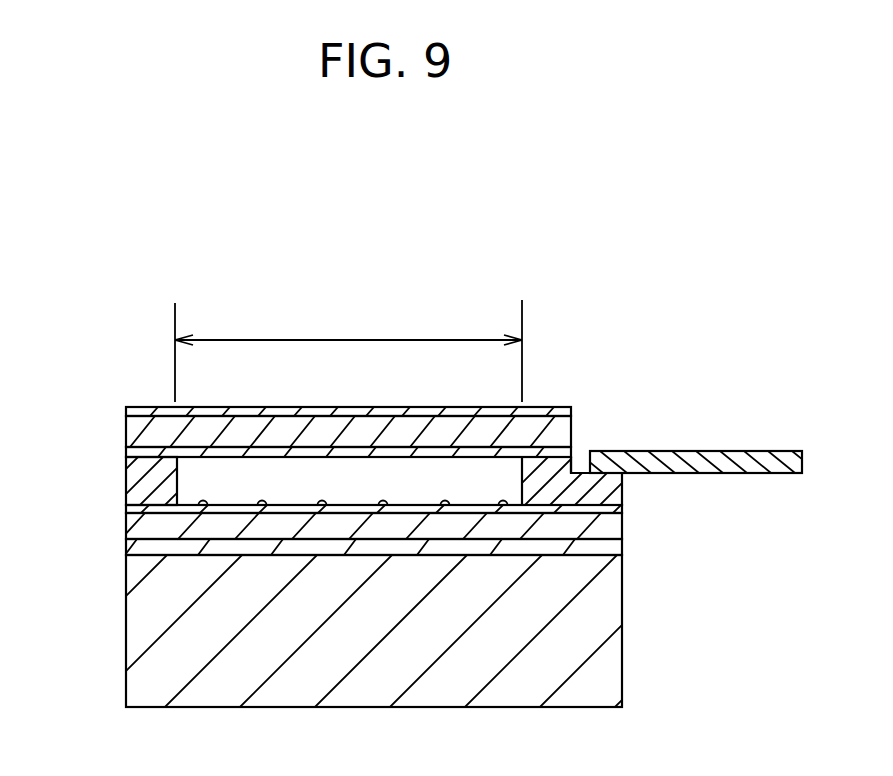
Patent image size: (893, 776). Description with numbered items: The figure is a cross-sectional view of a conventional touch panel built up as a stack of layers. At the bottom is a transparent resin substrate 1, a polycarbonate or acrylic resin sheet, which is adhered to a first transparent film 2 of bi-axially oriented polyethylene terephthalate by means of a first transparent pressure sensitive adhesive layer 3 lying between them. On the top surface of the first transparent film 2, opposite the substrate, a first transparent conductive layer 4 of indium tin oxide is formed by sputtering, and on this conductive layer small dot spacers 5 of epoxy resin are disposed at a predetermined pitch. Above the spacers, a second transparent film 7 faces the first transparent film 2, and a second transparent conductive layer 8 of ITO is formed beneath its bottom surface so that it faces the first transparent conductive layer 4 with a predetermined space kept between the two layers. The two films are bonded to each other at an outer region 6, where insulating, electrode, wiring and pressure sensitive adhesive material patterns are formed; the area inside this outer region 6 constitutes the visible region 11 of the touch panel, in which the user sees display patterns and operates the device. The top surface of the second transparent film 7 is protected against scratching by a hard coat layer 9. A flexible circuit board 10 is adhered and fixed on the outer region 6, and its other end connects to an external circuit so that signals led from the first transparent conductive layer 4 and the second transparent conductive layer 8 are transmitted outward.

The transparent resin substrate 1 is at (142, 675).
The first transparent film 2 is at (143, 530).
The first transparent pressure sensitive adhesive layer 3 is at (618, 547).
The first transparent conductive layer 4 is at (622, 508).
The dot spacers 5 is at (203, 502).
The outer region 6 is at (133, 492).
The second transparent film 7 is at (535, 432).
The second transparent conductive layer 8 is at (135, 451).
The hard coat layer 9 is at (133, 410).
The flexible circuit board 10 is at (697, 463).
The visible region 11 is at (353, 338).